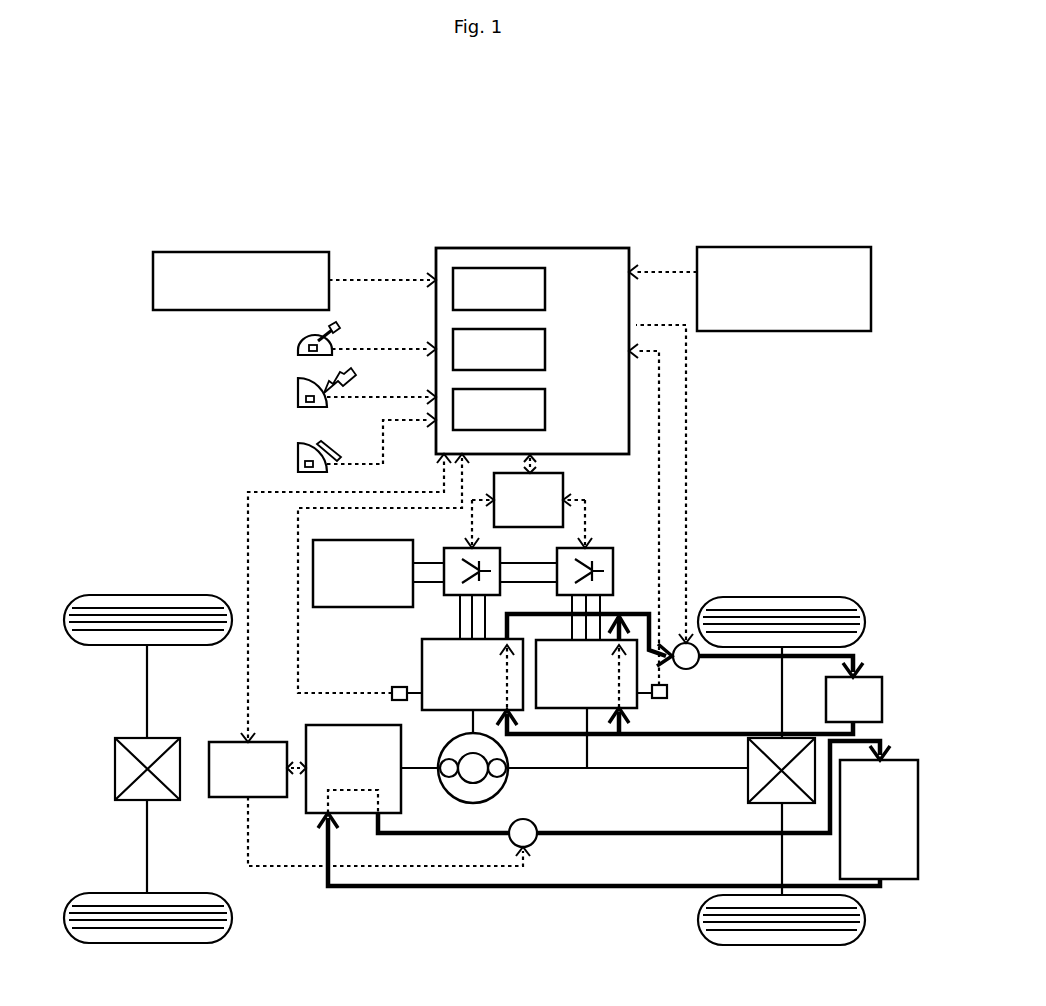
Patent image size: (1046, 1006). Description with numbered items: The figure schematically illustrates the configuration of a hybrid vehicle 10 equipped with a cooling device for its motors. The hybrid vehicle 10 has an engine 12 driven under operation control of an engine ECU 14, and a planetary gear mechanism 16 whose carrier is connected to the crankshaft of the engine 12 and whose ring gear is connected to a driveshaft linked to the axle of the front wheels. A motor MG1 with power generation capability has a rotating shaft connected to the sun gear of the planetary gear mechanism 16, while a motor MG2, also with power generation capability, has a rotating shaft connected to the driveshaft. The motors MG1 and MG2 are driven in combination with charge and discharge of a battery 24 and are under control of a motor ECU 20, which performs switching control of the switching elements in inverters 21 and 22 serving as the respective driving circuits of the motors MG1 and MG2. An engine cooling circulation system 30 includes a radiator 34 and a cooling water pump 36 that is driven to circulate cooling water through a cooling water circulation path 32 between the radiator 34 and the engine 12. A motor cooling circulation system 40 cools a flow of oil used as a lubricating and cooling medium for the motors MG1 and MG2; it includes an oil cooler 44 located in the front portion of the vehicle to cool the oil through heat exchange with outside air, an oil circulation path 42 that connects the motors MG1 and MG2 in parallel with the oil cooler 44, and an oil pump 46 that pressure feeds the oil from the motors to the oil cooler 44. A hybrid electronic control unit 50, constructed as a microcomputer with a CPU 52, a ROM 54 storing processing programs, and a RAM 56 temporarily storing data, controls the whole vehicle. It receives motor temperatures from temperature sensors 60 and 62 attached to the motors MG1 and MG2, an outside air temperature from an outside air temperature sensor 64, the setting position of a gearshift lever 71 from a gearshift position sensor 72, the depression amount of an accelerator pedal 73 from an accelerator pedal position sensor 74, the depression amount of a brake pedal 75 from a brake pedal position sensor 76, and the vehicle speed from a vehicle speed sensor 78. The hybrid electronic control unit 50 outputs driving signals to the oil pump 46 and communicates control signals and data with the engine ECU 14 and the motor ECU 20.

The hybrid vehicle 10 is at (683, 196).
The engine 12 is at (318, 725).
The engine electronic control unit 14 is at (237, 742).
The planetary gear mechanism 16 is at (508, 782).
The motor electronic control unit 20 is at (563, 478).
The inverter 21 is at (462, 548).
The inverter 22 is at (595, 548).
The battery 24 is at (340, 540).
The engine cooling circulation system 30 is at (563, 933).
The cooling water circulation path 32 is at (604, 888).
The radiator 34 is at (898, 880).
The cooling water pump 36 is at (537, 825).
The motor cooling circulation system 40 is at (708, 560).
The oil circulation path 42 is at (640, 736).
The oil cooler 44 is at (876, 677).
The oil pump 46 is at (698, 664).
The hybrid electronic control unit 50 is at (532, 335).
The CPU 52 is at (547, 289).
The ROM 54 is at (547, 349).
The RAM 56 is at (547, 409).
The temperature sensor 60 is at (392, 689).
The temperature sensor 62 is at (667, 692).
The outside air temperature sensor 64 is at (786, 247).
The gearshift lever 71 is at (328, 337).
The gearshift position sensor 72 is at (300, 345).
The accelerator pedal 73 is at (330, 383).
The accelerator pedal position sensor 74 is at (300, 392).
The brake pedal 75 is at (330, 447).
The brake pedal position sensor 76 is at (300, 457).
The vehicle speed sensor 78 is at (237, 252).
The motor MG1 is at (422, 660).
The motor MG2 is at (637, 704).